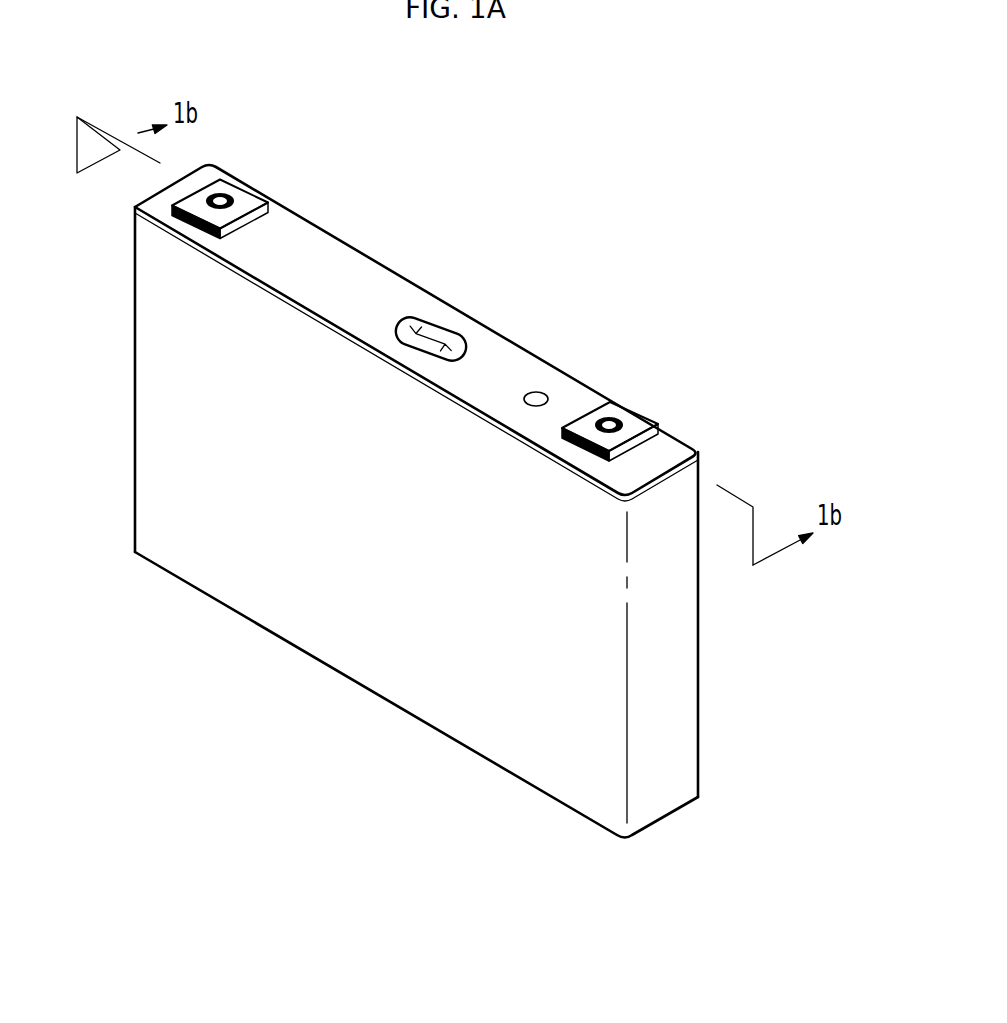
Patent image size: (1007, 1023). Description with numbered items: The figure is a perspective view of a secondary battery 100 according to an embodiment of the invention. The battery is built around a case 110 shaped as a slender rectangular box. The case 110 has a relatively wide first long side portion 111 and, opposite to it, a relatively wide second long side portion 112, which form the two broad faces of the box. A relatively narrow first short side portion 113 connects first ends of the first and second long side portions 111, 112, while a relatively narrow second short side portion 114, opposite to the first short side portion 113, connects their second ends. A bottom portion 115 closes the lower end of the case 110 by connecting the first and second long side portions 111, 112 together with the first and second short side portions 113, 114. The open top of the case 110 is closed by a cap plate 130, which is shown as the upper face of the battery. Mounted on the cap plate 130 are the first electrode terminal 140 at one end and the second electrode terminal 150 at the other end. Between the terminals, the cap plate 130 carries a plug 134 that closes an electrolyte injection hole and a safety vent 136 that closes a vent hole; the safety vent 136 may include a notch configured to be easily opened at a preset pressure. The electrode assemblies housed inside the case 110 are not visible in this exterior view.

The secondary battery 100 is at (850, 95).
The case 110 is at (300, 637).
The first long side portion 111 is at (698, 648).
The second long side portion 112 is at (405, 695).
The first short side portion 113 is at (135, 378).
The second short side portion 114 is at (682, 707).
The bottom portion 115 is at (482, 757).
The cap plate 130 is at (343, 263).
The plug 134 is at (539, 393).
The safety vent 136 is at (436, 331).
The first electrode terminal 140 is at (253, 178).
The second electrode terminal 150 is at (650, 394).